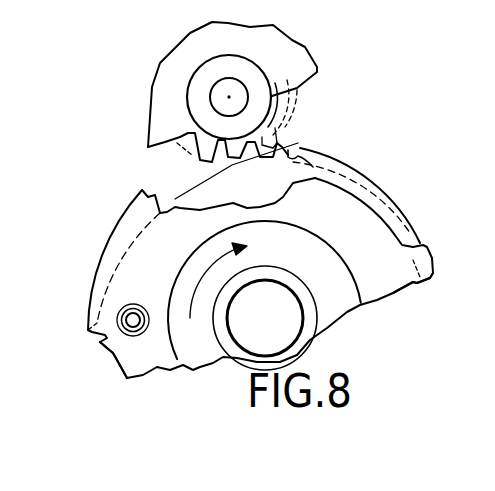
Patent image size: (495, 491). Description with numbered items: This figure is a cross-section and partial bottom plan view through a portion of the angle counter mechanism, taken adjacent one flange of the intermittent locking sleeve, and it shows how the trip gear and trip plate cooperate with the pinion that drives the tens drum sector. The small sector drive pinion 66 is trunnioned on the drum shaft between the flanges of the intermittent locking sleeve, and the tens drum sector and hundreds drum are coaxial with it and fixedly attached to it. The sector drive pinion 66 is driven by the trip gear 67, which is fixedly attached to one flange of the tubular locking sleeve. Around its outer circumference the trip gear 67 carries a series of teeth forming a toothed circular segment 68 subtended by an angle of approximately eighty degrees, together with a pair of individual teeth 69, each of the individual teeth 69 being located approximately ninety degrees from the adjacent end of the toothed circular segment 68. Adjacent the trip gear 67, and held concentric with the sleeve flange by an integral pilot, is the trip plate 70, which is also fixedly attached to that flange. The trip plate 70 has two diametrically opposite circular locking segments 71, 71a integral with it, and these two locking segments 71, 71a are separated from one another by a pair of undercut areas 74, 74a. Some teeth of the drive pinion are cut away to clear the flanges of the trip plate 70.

The sector drive pinion 66 is at (242, 108).
The trip gear 67 is at (178, 202).
The toothed circular segment 68 is at (298, 143).
The individual teeth 69 is at (100, 338).
The trip plate 70 is at (115, 273).
The locking segment 71 is at (114, 240).
The locking segment 71a is at (430, 280).
The undercut area 74 is at (393, 228).
The undercut area 74a is at (107, 357).